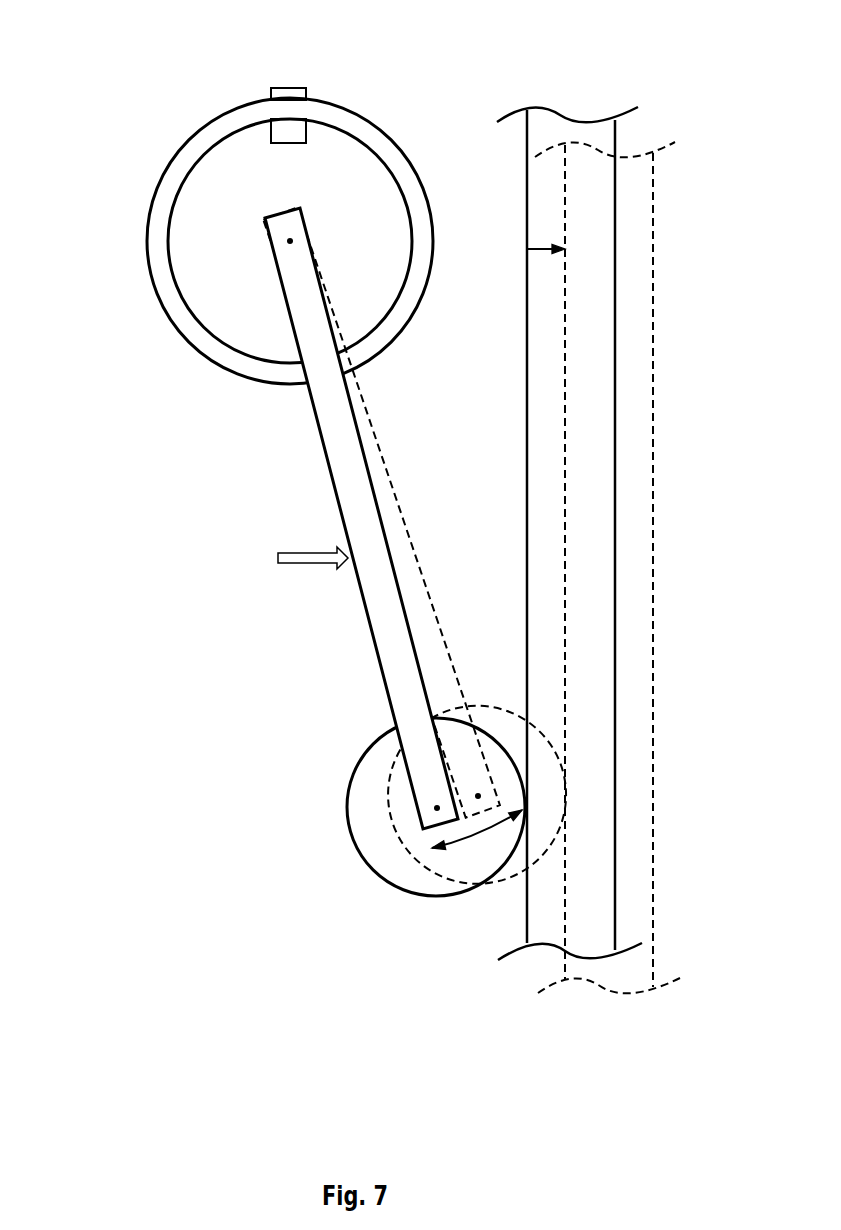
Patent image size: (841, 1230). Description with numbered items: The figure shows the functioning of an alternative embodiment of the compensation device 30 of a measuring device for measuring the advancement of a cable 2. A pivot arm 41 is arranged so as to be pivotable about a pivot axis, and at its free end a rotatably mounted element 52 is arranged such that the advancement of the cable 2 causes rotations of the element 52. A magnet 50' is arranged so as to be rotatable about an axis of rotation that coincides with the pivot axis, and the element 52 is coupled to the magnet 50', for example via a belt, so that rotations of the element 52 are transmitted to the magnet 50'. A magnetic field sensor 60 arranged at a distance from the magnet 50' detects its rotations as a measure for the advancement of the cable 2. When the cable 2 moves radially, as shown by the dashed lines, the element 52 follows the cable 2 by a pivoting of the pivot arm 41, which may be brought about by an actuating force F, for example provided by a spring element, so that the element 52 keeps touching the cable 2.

The cable 2 is at (618, 263).
The compensation device 30 is at (304, 462).
The pivot arm 41 is at (312, 434).
The magnet 50' is at (266, 234).
The rotatably mounted element 52 is at (370, 855).
The magnetic field sensor 60 is at (278, 85).
The actuating force F is at (313, 549).